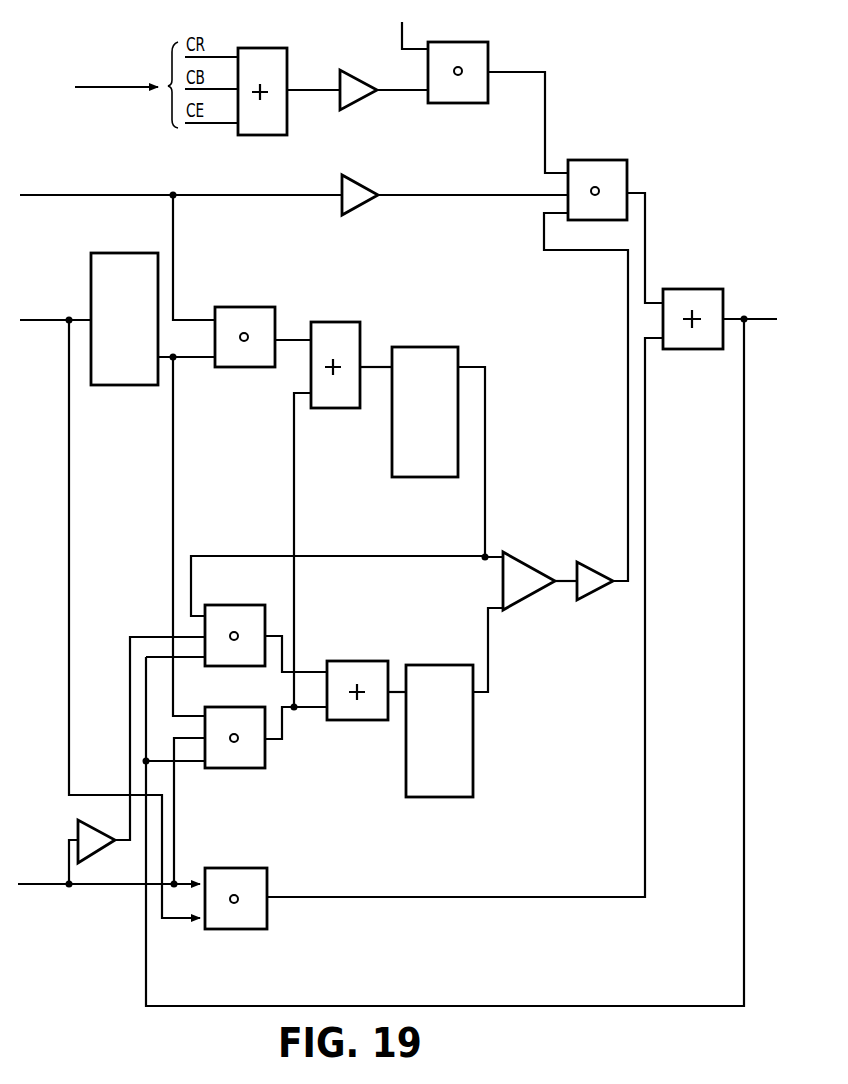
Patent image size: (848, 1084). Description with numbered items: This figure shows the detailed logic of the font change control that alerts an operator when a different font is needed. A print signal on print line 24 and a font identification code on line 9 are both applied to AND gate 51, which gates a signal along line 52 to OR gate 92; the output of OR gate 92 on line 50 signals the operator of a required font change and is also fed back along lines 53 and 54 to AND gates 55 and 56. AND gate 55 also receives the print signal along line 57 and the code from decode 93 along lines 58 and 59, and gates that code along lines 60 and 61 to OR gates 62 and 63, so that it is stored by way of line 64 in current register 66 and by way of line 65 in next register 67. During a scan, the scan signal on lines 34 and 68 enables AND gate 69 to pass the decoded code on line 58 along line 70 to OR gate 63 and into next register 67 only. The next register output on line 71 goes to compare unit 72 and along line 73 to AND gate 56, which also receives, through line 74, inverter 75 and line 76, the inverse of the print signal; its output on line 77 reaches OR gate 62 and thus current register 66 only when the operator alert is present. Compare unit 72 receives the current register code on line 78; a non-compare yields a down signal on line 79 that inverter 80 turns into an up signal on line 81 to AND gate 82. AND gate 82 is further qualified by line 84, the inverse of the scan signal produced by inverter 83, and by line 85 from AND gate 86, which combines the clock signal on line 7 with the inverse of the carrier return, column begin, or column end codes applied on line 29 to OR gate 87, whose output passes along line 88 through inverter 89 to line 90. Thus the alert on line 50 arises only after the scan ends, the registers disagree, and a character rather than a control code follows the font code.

The clock signal line 7 is at (402, 37).
The font identification code signal line 9 is at (46, 322).
The print line 24 is at (53, 884).
The control code signal line 29 is at (116, 84).
The scan signal line 34 is at (84, 194).
The font change output line 50 is at (751, 324).
The AND gate 51 is at (248, 872).
The AND gate 51 output line 52 is at (326, 894).
The feedback line 53 is at (702, 1006).
The feedback branch line 54 is at (179, 667).
The AND gate 55 is at (265, 770).
The AND gate 56 is at (224, 605).
The print branch line 57 is at (183, 807).
The decode output line 58 is at (166, 364).
The decode output branch line 59 is at (173, 420).
The AND gate 55 output line 60 is at (282, 730).
The AND gate 55 output branch line 61 is at (294, 529).
The OR gate 62 is at (349, 661).
The OR gate 63 is at (330, 322).
The current register input line 64 is at (392, 687).
The next register input line 65 is at (370, 366).
The current register 66 is at (478, 758).
The next register 67 is at (459, 347).
The scan branch line 68 is at (176, 240).
The AND gate 69 is at (238, 307).
The AND gate 69 output line 70 is at (286, 340).
The next register output line 71 is at (486, 391).
The compare unit 72 is at (536, 596).
The next register output branch line 73 is at (408, 558).
The print branch line to inverter 74 is at (67, 848).
The inverter 75 is at (78, 824).
The inverter 75 output line 76 is at (130, 736).
The AND gate 56 output line 77 is at (282, 624).
The current register output line 78 is at (495, 636).
The compare output line 79 is at (566, 578).
The inverter 80 is at (583, 562).
The inverter 80 output line 81 is at (528, 250).
The AND gate 82 is at (601, 160).
The inverter 83 is at (336, 176).
The inverter 83 output line 84 is at (450, 194).
The AND gate 86 output line 85 is at (528, 72).
The AND gate 86 is at (489, 44).
The OR gate 87 is at (257, 48).
The OR gate 87 output line 88 is at (306, 90).
The inverter 89 is at (366, 101).
The inverter 89 output line 90 is at (408, 93).
The OR gate 92 is at (675, 349).
The decode 93 is at (91, 259).